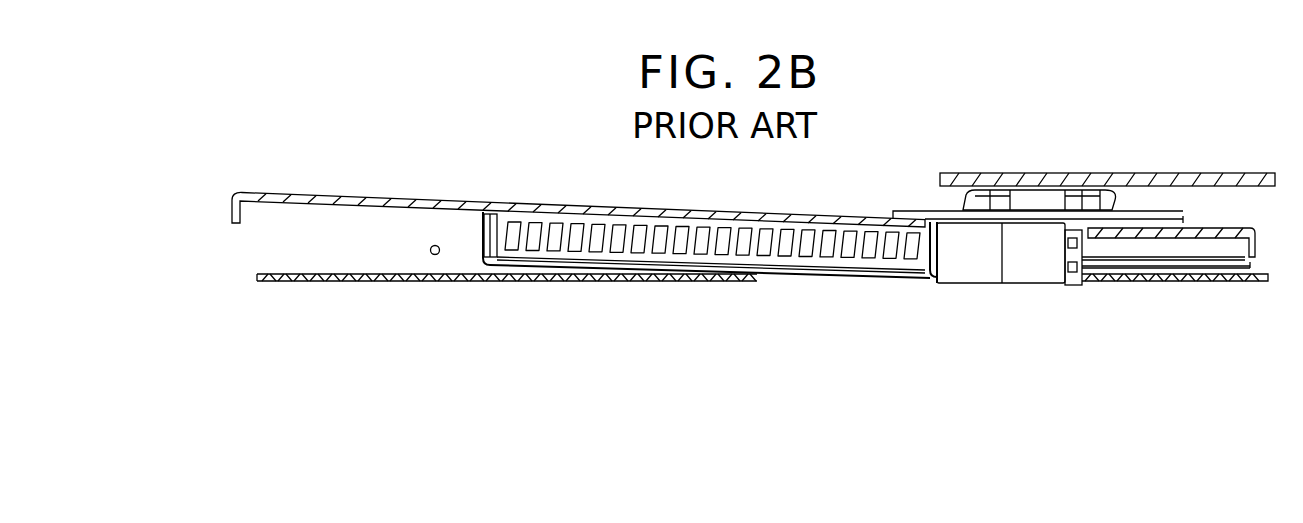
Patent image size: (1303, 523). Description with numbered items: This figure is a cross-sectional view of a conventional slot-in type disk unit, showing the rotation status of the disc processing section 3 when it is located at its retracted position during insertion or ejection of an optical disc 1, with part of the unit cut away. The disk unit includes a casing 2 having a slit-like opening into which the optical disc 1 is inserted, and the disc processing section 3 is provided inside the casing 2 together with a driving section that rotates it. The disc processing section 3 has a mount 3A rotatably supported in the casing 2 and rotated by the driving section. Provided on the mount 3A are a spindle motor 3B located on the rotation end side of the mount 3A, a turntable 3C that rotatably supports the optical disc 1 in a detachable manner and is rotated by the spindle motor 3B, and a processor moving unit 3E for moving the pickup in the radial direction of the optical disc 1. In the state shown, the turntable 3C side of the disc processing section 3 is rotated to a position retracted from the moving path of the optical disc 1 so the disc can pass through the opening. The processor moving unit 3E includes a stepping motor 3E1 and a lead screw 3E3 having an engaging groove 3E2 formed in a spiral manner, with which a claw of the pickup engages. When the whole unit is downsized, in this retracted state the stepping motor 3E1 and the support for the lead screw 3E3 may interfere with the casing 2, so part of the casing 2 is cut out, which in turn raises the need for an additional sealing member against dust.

The optical disc 1 is at (1225, 172).
The casing 2 is at (1207, 283).
The disc processing section 3 is at (1255, 232).
The mount 3A is at (1210, 228).
The spindle motor 3B is at (1137, 250).
The turntable 3C is at (1150, 217).
The processor moving unit 3E is at (939, 302).
The stepping motor 3E1 is at (1032, 262).
The engaging groove 3E2 is at (843, 262).
The lead screw 3E3 is at (765, 262).